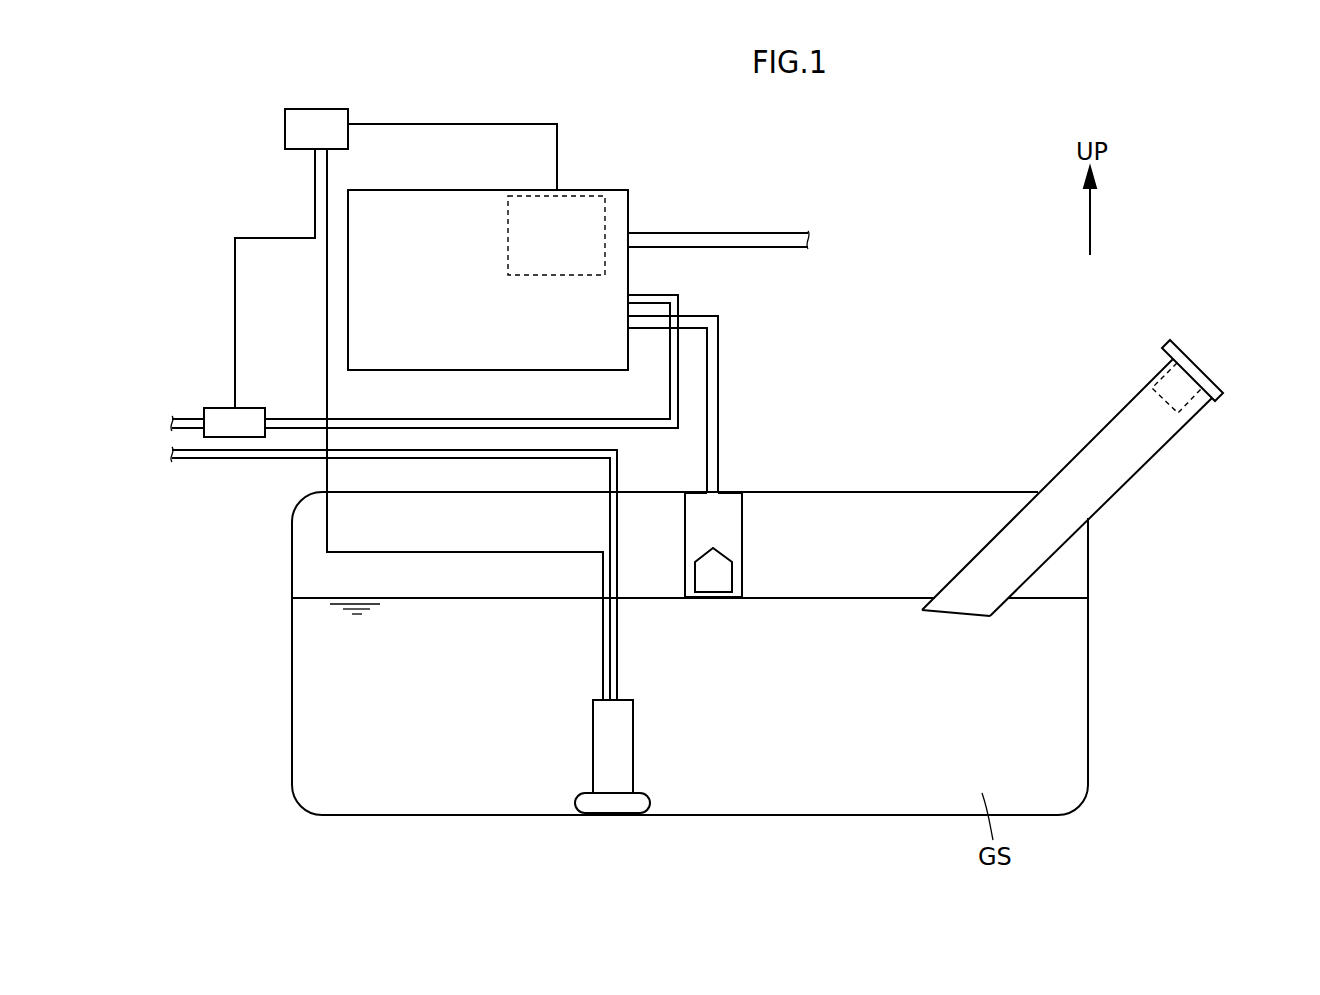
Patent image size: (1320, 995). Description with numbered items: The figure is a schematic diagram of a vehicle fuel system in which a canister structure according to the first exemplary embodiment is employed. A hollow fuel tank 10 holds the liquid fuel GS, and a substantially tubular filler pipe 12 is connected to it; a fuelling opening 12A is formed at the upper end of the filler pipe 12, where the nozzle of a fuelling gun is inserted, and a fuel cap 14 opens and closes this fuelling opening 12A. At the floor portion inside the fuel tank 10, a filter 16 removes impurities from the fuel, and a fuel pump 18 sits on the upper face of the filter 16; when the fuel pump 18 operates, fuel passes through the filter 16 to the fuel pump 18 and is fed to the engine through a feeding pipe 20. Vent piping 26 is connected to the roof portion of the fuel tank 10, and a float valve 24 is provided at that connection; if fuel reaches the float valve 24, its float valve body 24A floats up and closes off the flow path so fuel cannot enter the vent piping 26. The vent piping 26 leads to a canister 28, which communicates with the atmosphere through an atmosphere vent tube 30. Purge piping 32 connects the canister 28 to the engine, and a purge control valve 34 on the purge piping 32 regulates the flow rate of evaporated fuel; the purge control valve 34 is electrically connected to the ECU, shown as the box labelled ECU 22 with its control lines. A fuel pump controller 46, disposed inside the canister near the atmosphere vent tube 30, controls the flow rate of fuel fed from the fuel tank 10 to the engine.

The fuel tank 10 is at (1090, 690).
The filler pipe 12 is at (1148, 472).
The fuelling opening 12A is at (1212, 378).
The fuel cap 14 is at (1183, 345).
The filter 16 is at (575, 800).
The fuel pump 18 is at (635, 752).
The feeding pipe 20 is at (222, 462).
The ECU 22 is at (283, 128).
The float valve 24 is at (752, 532).
The float valve body 24A is at (730, 585).
The vent piping 26 is at (720, 390).
The canister 28 is at (602, 178).
The atmosphere vent tube 30 is at (730, 231).
The purge piping 32 is at (535, 418).
The purge control valve 34 is at (220, 407).
The fuel pump controller 46 is at (616, 259).